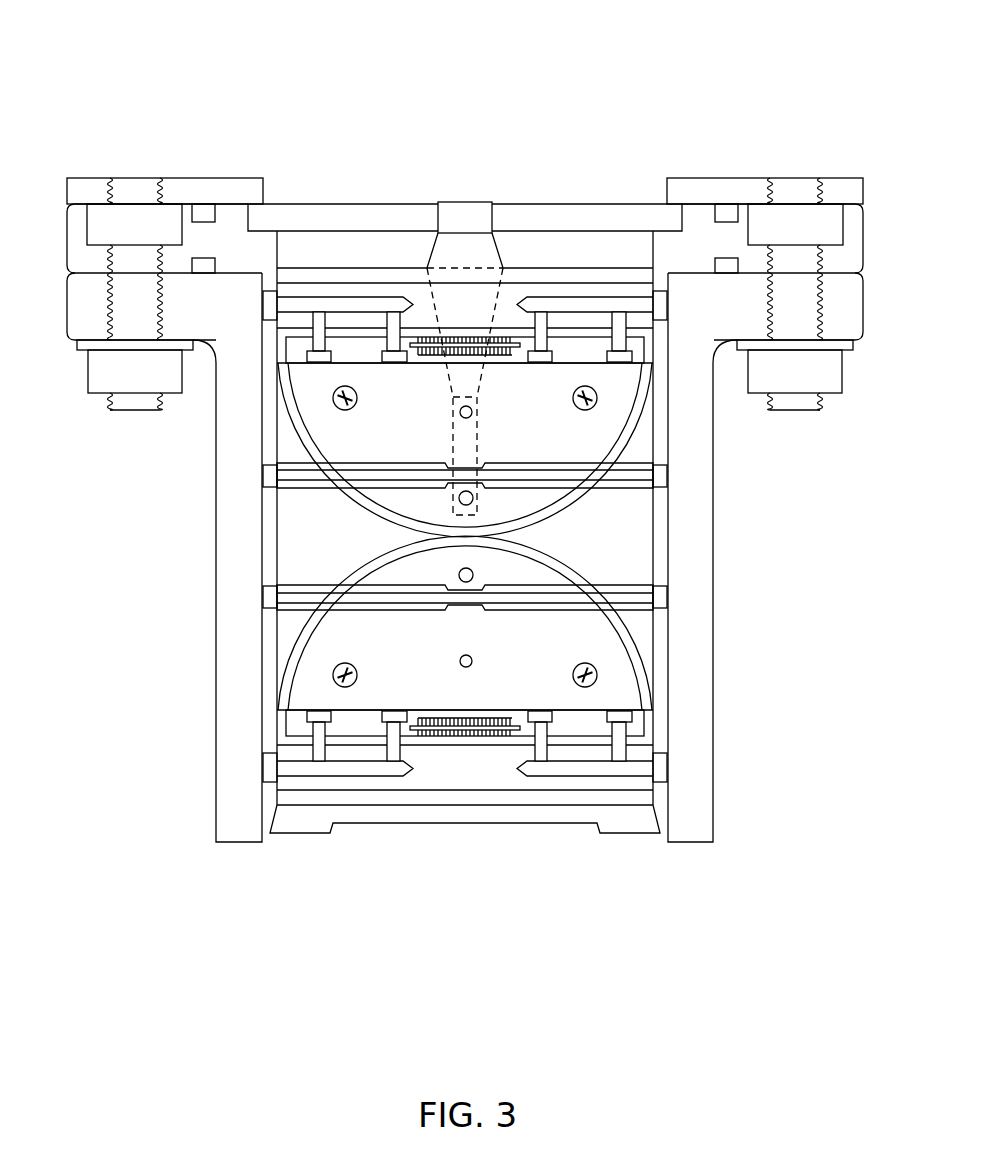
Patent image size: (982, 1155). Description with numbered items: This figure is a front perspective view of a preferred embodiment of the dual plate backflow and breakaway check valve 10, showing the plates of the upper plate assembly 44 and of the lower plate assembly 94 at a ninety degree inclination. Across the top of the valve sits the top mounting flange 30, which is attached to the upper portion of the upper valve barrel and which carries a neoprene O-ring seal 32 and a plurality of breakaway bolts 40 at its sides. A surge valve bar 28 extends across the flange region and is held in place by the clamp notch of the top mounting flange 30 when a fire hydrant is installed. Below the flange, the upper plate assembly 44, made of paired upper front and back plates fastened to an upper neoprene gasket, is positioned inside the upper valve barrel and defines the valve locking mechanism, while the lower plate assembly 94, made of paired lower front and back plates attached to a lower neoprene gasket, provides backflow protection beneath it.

The dual plate backflow and breakaway check valve 10 is at (503, 73).
The surge valve bar 28 is at (350, 201).
The top mounting flange 30 is at (63, 318).
The neoprene O-ring seal 32 is at (728, 212).
The breakaway bolts 40 is at (80, 224).
The upper plate assembly 44 is at (320, 410).
The lower plate assembly 94 is at (320, 657).